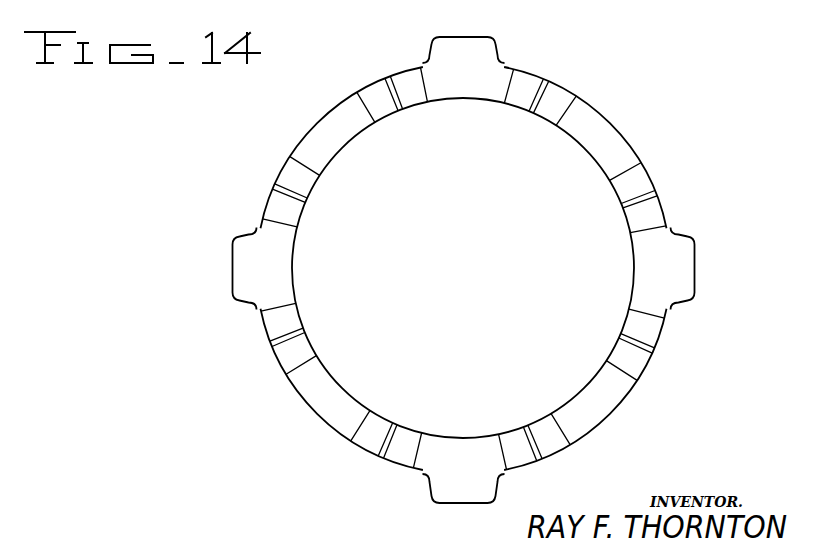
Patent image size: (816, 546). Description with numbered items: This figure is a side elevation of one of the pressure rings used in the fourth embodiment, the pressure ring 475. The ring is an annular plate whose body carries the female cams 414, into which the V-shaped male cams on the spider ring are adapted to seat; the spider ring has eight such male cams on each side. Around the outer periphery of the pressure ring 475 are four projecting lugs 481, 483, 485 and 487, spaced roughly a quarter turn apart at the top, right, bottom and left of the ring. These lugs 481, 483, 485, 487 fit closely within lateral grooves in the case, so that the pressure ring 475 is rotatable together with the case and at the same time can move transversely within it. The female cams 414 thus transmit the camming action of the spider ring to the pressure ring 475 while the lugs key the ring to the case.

The pressure ring 475 is at (613, 114).
The female cams 414 is at (558, 98).
The lug 481 is at (482, 47).
The lug 483 is at (683, 253).
The lug 485 is at (437, 491).
The lug 487 is at (237, 280).